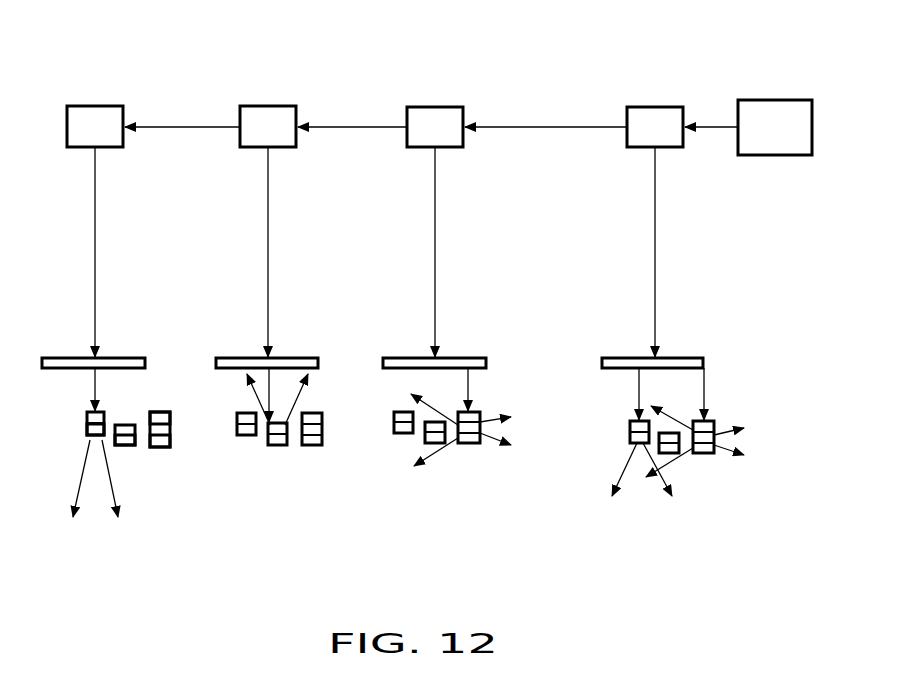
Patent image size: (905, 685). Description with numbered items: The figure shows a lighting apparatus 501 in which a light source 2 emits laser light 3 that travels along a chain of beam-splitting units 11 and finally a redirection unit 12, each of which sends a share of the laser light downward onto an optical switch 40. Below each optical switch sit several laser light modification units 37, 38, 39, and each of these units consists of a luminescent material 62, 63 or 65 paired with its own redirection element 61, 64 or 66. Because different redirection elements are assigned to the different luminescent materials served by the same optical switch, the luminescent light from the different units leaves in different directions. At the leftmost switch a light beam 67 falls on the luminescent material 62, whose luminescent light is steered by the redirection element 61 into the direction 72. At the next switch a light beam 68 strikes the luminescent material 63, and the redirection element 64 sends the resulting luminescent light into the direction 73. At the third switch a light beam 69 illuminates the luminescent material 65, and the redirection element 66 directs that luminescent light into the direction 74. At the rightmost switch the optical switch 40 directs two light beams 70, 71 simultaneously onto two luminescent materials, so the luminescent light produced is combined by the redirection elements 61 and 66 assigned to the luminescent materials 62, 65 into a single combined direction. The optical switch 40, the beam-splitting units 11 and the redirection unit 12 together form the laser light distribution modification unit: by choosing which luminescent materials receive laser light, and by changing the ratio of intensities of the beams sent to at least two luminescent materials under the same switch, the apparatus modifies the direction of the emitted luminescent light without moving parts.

The lighting apparatus 501 is at (556, 72).
The light source 2 is at (775, 100).
The laser light 3 is at (713, 128).
The beam-splitting unit 11 is at (268, 106).
The redirection unit 12 is at (95, 106).
The optical switch 40 is at (52, 357).
The laser light modification unit 39 is at (124, 407).
The light beam 67 is at (95, 388).
The redirection element 61 is at (87, 421).
The luminescent material 62 is at (87, 430).
The luminescent material 63 is at (125, 425).
The redirection element 64 is at (128, 447).
The luminescent material 65 is at (170, 430).
The redirection element 66 is at (167, 412).
The laser light modification unit 37 is at (75, 456).
The laser light modification unit 38 is at (143, 452).
The direction 72 is at (110, 540).
The light beam 68 is at (280, 385).
The direction 73 is at (262, 448).
The light beam 69 is at (468, 390).
The direction 74 is at (475, 458).
The light beam 70 is at (639, 395).
The light beam 71 is at (704, 395).